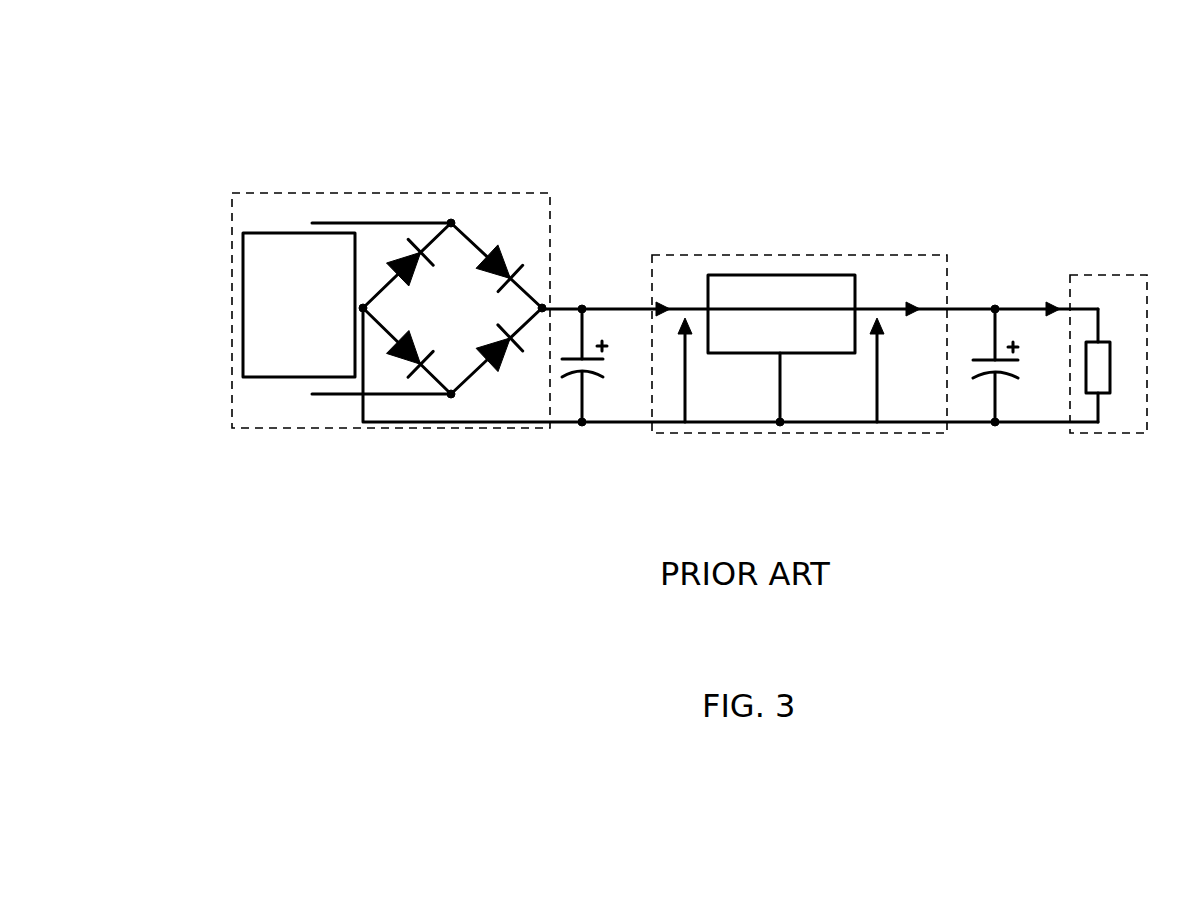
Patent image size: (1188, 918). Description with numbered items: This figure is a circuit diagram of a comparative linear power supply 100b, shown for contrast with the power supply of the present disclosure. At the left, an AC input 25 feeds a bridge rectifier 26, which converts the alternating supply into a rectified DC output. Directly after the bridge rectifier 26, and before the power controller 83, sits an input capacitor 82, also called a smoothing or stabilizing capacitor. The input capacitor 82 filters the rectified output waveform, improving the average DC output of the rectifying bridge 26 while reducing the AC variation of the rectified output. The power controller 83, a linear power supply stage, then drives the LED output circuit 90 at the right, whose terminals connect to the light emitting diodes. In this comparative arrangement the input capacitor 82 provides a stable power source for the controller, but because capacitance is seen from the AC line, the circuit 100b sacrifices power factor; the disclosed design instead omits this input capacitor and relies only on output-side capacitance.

The comparative linear power supply 100b is at (807, 58).
The AC input 25 is at (312, 193).
The bridge rectifier 26 is at (427, 327).
The input capacitor 82 is at (598, 343).
The power controller 83 is at (800, 255).
The LED output circuit 90 is at (1093, 275).